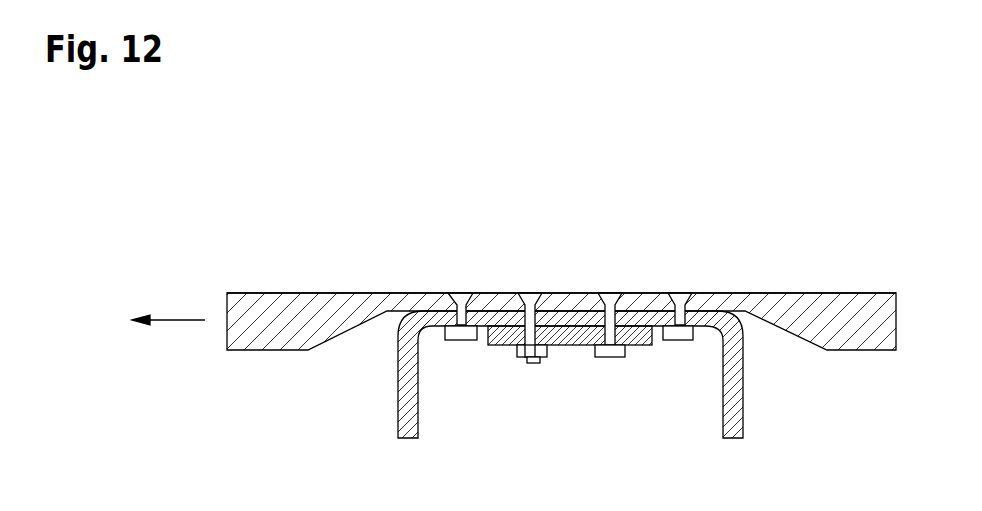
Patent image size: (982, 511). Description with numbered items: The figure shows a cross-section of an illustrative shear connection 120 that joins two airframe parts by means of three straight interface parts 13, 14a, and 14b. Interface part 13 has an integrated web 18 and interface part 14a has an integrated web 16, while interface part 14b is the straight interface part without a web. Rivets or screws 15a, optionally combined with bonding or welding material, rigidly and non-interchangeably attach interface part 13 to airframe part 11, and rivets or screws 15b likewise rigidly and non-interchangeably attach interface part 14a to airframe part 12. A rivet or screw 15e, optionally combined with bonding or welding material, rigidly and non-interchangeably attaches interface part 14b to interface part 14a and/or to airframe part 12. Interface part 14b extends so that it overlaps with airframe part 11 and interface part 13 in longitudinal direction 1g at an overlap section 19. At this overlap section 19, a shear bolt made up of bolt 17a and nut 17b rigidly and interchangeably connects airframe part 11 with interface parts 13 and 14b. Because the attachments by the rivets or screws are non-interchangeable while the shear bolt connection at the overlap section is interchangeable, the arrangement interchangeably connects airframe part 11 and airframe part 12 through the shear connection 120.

The airframe part 11 is at (275, 305).
The airframe part 12 is at (828, 302).
The straight interface part 13 is at (400, 332).
The straight interface part 14a is at (707, 318).
The straight interface part 14b is at (643, 333).
The rivets or screws 15a is at (458, 295).
The rivets or screws 15b is at (683, 295).
The rivet or screw 15e is at (613, 295).
The integrated web 16 is at (735, 414).
The bolt 17a is at (529, 364).
The nut 17b is at (515, 348).
The integrated web 18 is at (406, 416).
The overlap section 19 is at (577, 283).
The shear connection 120 is at (561, 299).
The longitudinal direction 1g is at (175, 322).